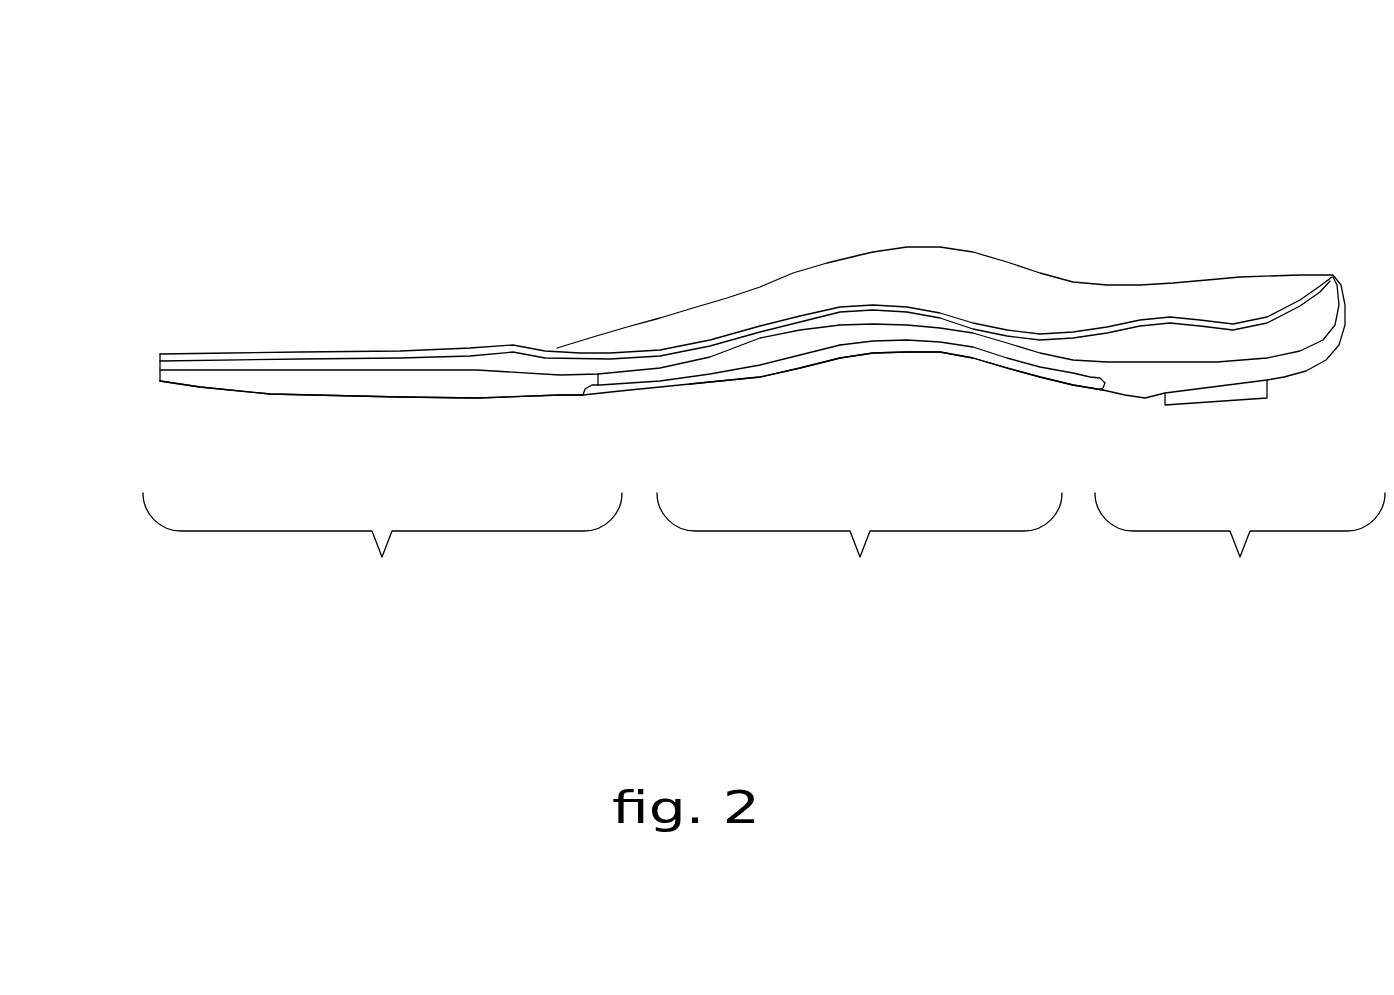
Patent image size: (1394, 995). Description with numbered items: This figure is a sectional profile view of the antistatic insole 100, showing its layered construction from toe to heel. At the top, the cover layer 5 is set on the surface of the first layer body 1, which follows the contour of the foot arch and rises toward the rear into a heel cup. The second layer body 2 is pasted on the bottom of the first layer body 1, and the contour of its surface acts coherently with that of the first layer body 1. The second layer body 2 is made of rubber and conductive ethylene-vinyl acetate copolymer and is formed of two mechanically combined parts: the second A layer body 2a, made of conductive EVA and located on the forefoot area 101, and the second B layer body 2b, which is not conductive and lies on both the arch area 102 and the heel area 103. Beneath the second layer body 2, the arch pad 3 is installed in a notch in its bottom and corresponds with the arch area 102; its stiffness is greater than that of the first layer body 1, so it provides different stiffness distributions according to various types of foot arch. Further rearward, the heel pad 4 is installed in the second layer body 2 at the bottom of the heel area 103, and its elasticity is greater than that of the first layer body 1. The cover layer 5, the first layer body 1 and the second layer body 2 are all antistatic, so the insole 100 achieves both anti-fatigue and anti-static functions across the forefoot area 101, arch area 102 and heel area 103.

The antistatic insole 100 is at (254, 73).
The first layer body 1 is at (146, 362).
The second layer body 2 is at (146, 382).
The second A layer body 2a is at (296, 382).
The second B layer body 2b is at (659, 366).
The arch pad 3 is at (803, 371).
The heel pad 4 is at (1278, 384).
The cover layer 5 is at (278, 345).
The forefoot area 101 is at (382, 549).
The arch area 102 is at (859, 549).
The heel area 103 is at (1240, 549).